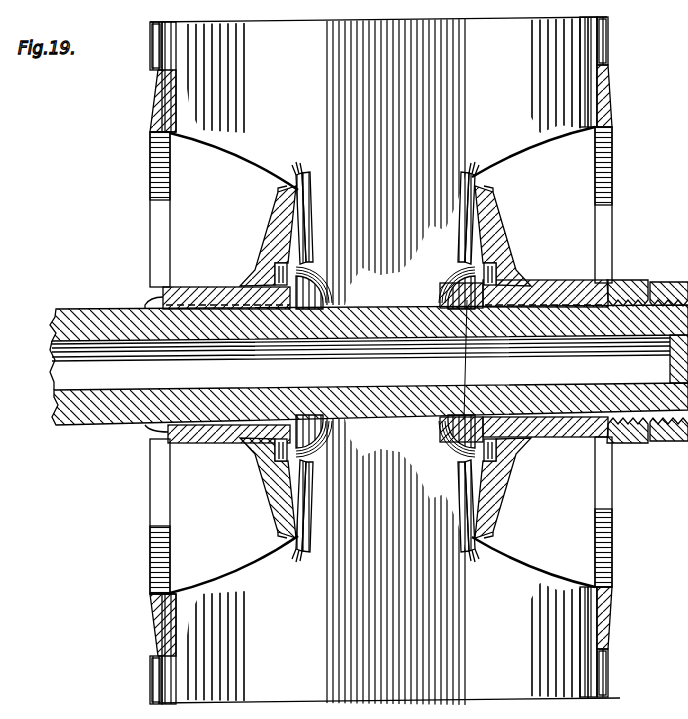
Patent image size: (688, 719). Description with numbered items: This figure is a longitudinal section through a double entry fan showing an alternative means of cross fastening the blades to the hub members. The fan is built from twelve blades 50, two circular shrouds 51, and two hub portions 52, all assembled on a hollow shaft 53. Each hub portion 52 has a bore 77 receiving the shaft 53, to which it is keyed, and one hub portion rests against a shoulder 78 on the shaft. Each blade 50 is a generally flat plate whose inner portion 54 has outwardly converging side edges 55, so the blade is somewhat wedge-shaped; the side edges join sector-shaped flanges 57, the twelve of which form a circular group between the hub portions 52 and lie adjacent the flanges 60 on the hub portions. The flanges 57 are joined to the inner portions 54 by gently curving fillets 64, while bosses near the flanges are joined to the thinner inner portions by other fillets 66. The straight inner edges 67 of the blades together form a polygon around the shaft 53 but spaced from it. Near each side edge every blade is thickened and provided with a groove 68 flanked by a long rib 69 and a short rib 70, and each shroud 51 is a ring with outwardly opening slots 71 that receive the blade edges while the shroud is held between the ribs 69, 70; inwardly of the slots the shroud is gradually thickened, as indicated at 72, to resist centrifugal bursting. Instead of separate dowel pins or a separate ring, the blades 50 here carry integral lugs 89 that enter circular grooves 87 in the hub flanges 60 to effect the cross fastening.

The blade 50 is at (309, 47).
The circular shroud 51 is at (160, 201).
The hub portion 52 is at (248, 286).
The hollow shaft 53 is at (78, 302).
The inner portion 54 is at (448, 208).
The side edge 55 is at (297, 222).
The sector-shaped flange 57 is at (314, 286).
The hub flange 60 is at (279, 192).
The fillet 64 is at (301, 205).
The fillet 66 is at (332, 270).
The inner edge 67 is at (462, 420).
The groove 68 is at (608, 38).
The long rib 69 is at (615, 603).
The short rib 70 is at (152, 60).
The slot 71 is at (170, 85).
The thickened portion 72 is at (612, 112).
The bore 77 is at (218, 418).
The shoulder 78 is at (152, 297).
The circular groove 87 is at (270, 258).
The integral lug 89 is at (276, 270).